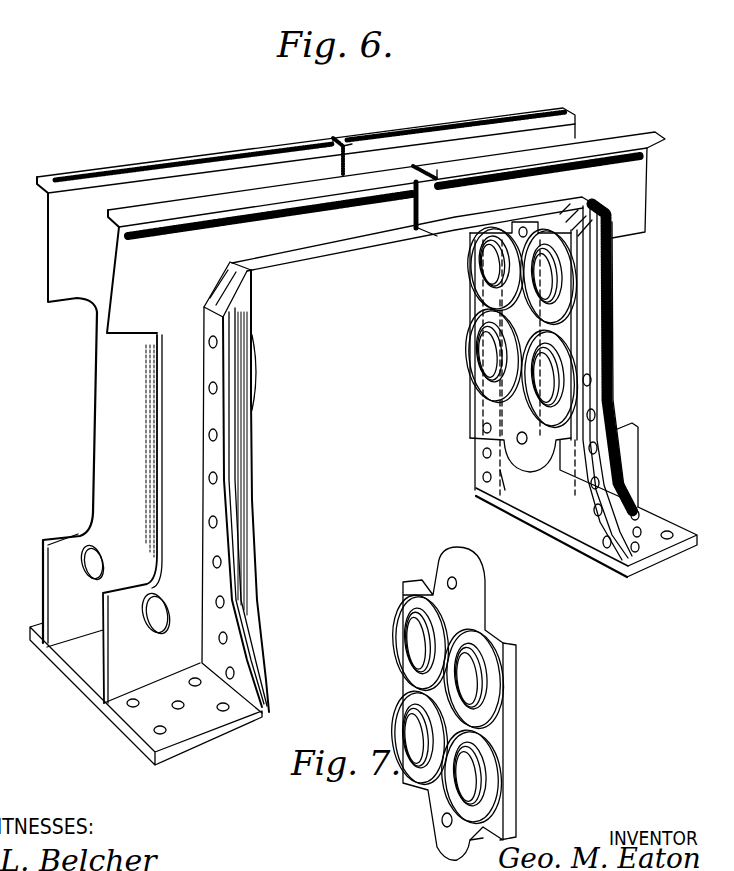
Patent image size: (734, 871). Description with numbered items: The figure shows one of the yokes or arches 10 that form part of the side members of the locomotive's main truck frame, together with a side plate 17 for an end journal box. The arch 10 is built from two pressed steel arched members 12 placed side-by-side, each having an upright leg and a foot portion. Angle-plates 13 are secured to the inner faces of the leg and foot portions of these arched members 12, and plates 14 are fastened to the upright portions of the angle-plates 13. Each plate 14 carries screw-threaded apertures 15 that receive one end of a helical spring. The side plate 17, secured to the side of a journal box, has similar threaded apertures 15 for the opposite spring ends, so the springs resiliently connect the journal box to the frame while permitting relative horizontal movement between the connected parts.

In FIG. 6, the arch 10 is at (338, 256).
In FIG. 6, the pressed steel arched member 12 is at (565, 111).
In FIG. 6, the angle-plate 13 is at (247, 647).
In FIG. 6, the plate 14 is at (470, 388).
In FIG. 6, the screw-threaded aperture 15 is at (476, 348).
In FIG. 7, the side plate 17 is at (510, 702).